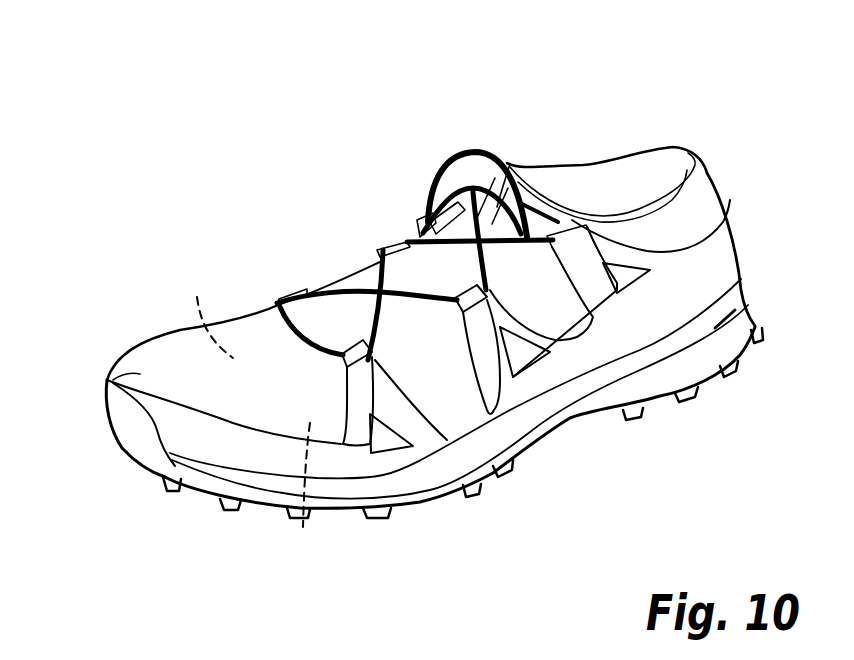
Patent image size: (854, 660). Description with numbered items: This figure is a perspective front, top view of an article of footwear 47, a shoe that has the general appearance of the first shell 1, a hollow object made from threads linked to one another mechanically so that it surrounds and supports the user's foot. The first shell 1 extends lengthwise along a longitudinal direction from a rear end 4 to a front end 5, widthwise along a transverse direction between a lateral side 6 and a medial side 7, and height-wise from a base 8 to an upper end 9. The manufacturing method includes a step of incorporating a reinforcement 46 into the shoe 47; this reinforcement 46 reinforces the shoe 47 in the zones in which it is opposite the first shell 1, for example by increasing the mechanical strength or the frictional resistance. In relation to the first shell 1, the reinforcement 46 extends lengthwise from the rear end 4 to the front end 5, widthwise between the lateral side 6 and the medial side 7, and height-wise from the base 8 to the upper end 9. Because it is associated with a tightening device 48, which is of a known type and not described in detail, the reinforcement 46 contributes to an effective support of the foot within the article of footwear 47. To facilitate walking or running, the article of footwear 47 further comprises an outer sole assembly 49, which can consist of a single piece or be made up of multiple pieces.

The first shell 1 is at (587, 154).
The rear end 4 is at (720, 189).
The front end 5 is at (107, 380).
The lateral side 6 is at (443, 410).
The medial side 7 is at (198, 293).
The base 8 is at (303, 527).
The upper end 9 is at (657, 147).
The reinforcement 46 is at (620, 330).
The article of footwear 47 is at (300, 128).
The tightening device 48 is at (488, 153).
The outer sole assembly 49 is at (393, 507).